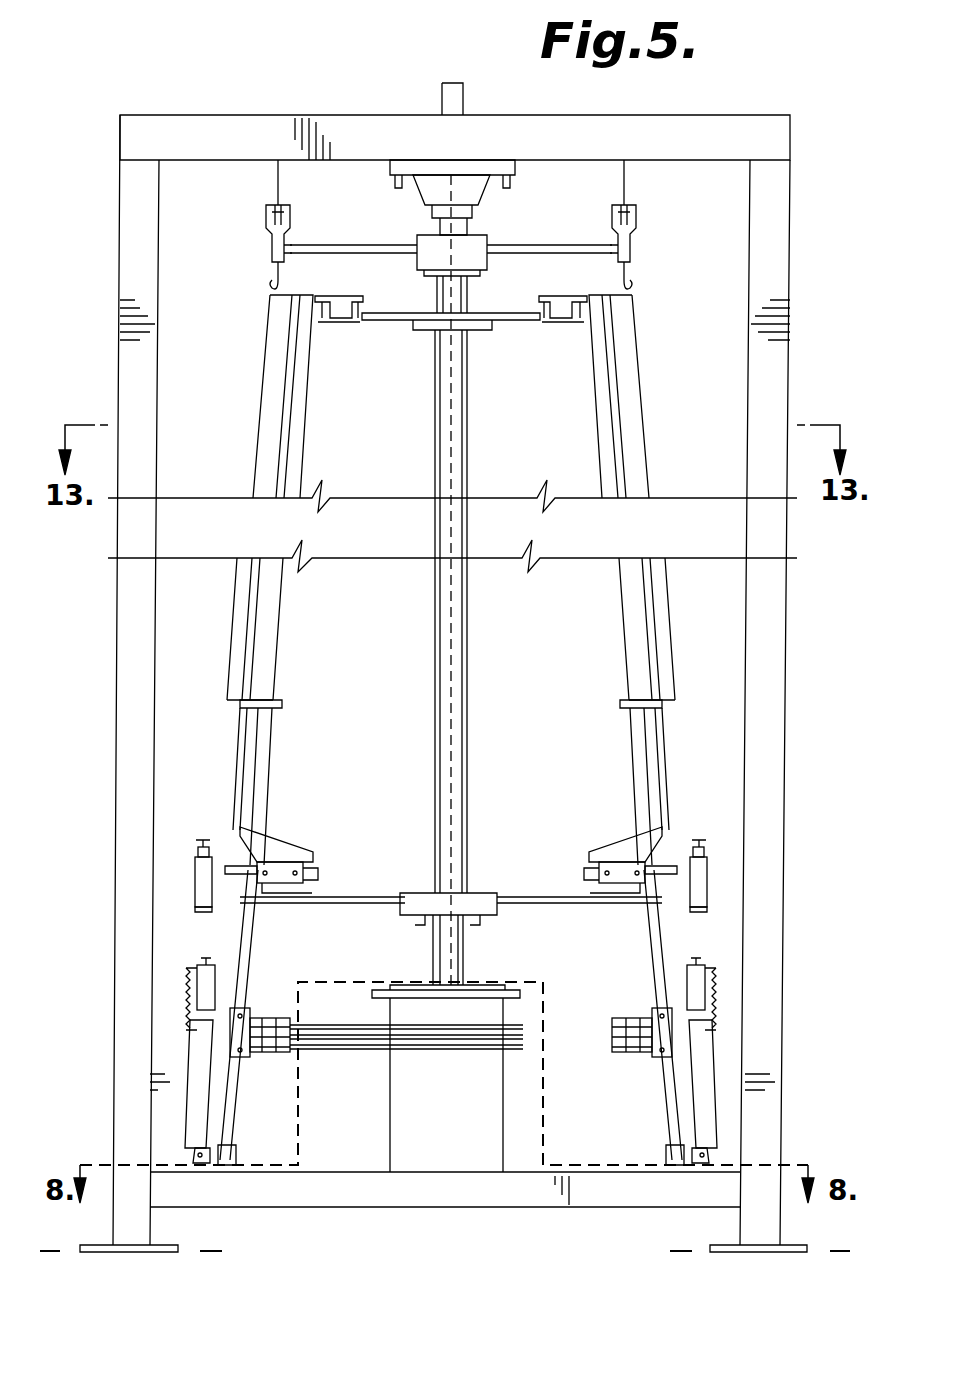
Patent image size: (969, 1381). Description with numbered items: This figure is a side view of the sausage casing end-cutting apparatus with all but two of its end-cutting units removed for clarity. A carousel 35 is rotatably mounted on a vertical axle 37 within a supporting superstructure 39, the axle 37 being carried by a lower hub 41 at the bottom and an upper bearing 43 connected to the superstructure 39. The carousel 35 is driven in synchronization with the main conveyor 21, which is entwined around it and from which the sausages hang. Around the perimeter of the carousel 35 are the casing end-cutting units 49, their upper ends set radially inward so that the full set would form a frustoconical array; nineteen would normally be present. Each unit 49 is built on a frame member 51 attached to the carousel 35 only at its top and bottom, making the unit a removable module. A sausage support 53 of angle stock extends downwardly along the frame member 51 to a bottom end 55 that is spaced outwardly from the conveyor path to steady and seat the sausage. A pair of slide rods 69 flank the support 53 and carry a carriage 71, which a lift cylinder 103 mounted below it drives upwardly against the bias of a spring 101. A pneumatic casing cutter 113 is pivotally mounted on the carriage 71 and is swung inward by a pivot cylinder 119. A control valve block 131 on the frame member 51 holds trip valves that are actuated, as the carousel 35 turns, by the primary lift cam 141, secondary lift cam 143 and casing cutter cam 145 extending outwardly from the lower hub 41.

The superstructure 39 is at (155, 115).
The upper bearing 43 is at (482, 195).
The main conveyor 21 is at (640, 200).
The axle 37 is at (470, 400).
The carousel 35 is at (536, 322).
The sausage support 53 is at (268, 352).
The casing end-cutting unit 49 is at (300, 640).
The bottom end 55 is at (238, 704).
The frame member 51 is at (276, 730).
The slide rods 69 is at (238, 775).
The casing cutter 113 is at (193, 875).
The pivot cylinder 119 is at (285, 870).
The carriage 71 is at (232, 946).
The spring 101 is at (190, 975).
The control valve block 131 is at (252, 1008).
The lift cylinder 103 is at (210, 1105).
The primary lift cam 141 is at (322, 1050).
The secondary lift cam 143 is at (310, 1035).
The casing cutter cam 145 is at (340, 1025).
The lower hub 41 is at (480, 985).